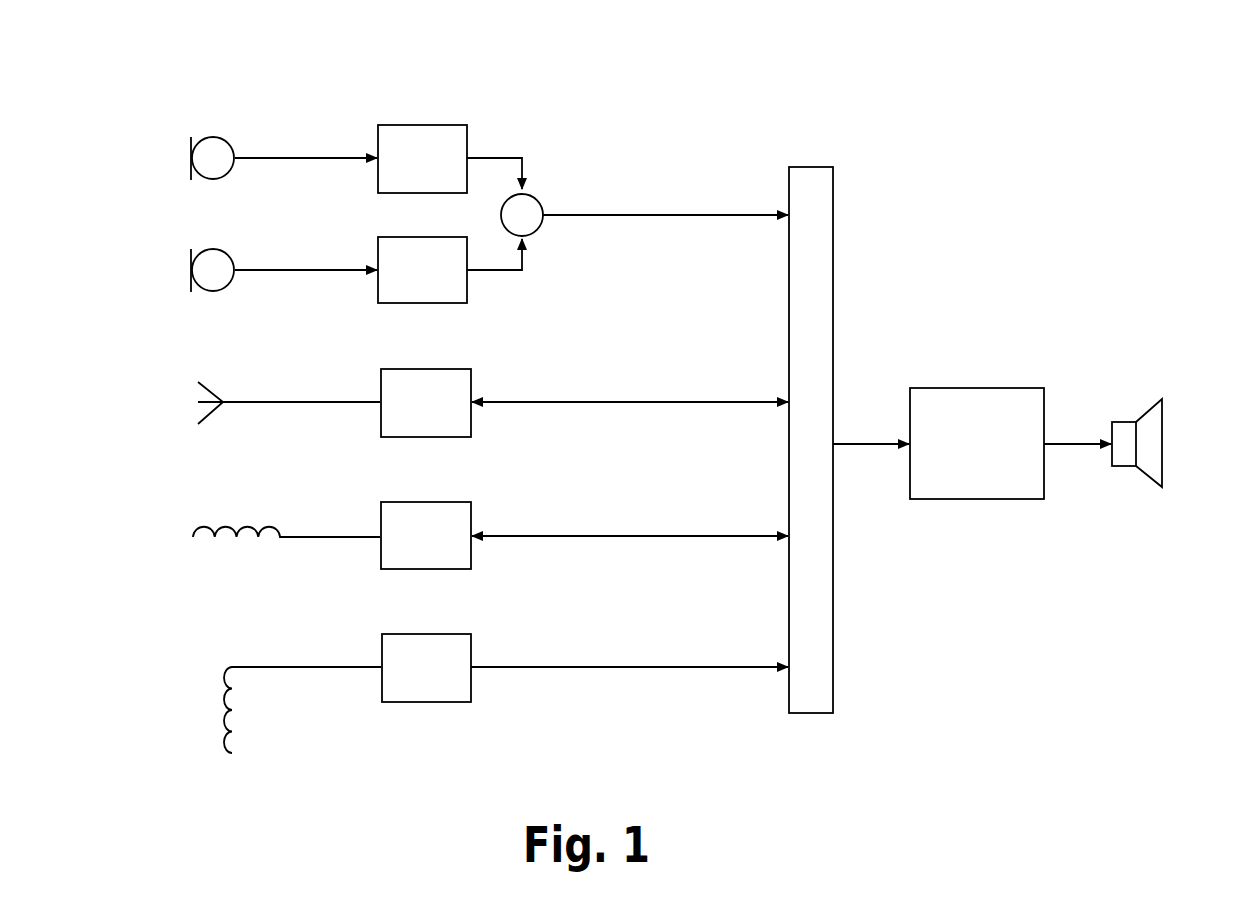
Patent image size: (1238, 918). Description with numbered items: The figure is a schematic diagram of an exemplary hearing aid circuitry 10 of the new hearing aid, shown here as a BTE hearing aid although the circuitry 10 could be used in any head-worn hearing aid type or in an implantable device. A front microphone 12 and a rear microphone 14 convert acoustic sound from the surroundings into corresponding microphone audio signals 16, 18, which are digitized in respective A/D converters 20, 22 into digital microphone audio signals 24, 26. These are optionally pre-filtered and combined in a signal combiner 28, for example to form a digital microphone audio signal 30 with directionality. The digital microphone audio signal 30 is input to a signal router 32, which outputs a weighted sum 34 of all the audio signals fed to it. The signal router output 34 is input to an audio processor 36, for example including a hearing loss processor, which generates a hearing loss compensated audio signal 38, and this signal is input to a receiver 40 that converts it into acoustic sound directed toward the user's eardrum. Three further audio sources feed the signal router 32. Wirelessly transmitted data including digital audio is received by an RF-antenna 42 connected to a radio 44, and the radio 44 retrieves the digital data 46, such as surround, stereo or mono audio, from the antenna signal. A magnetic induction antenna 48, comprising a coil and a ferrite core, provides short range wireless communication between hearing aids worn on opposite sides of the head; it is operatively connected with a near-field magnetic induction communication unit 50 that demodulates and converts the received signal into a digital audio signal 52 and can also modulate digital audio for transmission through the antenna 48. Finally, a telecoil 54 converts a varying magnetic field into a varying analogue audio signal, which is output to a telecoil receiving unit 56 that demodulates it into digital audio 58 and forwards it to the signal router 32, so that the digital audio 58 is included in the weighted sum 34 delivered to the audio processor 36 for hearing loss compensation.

The hearing aid circuitry 10 is at (1015, 258).
The front microphone 12 is at (212, 145).
The rear microphone 14 is at (212, 255).
The microphone audio signal 16 is at (310, 157).
The microphone audio signal 18 is at (310, 268).
The A/D converter 20 is at (438, 173).
The A/D converter 22 is at (438, 284).
The digital microphone audio signal 24 is at (500, 157).
The digital microphone audio signal 26 is at (498, 273).
The signal combiner 28 is at (530, 204).
The digital microphone audio signal 30 is at (660, 213).
The signal router 32 is at (808, 174).
The signal router output 34 is at (878, 442).
The audio processor 36 is at (992, 458).
The hearing loss compensated audio signal 38 is at (1073, 442).
The receiver 40 is at (1130, 420).
The RF-antenna 42 is at (205, 395).
The radio 44 is at (442, 417).
The digital data 46 is at (660, 400).
The magnetic induction antenna 48 is at (208, 525).
The near-field magnetic induction communication unit 50 is at (442, 550).
The digital audio signal 52 is at (662, 533).
The telecoil 54 is at (228, 660).
The telecoil receiving unit 56 is at (442, 682).
The digital audio 58 is at (665, 665).